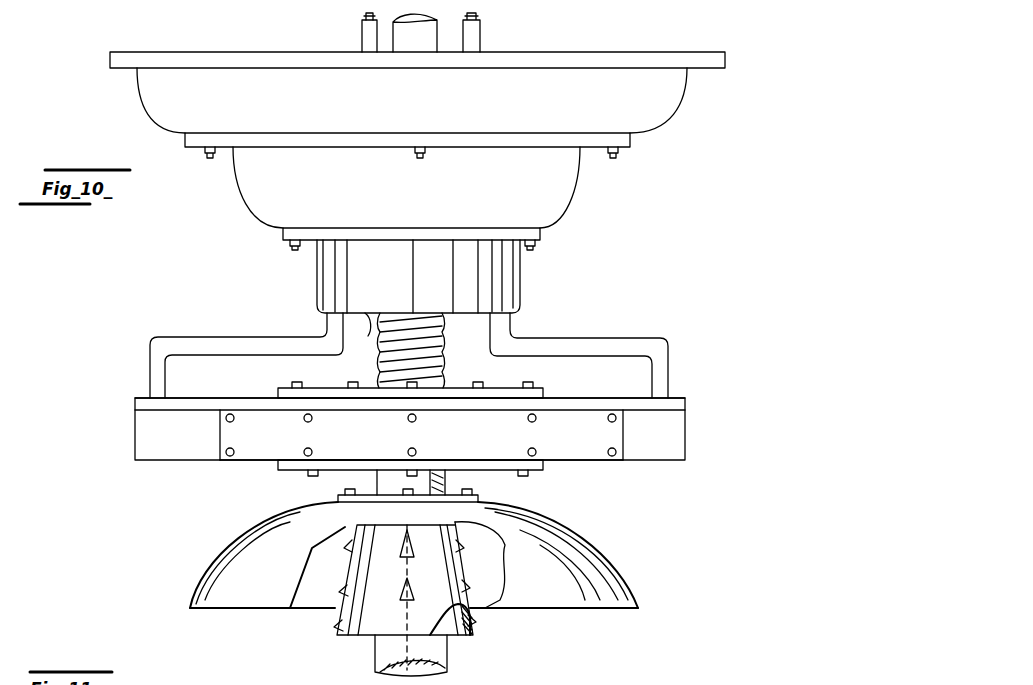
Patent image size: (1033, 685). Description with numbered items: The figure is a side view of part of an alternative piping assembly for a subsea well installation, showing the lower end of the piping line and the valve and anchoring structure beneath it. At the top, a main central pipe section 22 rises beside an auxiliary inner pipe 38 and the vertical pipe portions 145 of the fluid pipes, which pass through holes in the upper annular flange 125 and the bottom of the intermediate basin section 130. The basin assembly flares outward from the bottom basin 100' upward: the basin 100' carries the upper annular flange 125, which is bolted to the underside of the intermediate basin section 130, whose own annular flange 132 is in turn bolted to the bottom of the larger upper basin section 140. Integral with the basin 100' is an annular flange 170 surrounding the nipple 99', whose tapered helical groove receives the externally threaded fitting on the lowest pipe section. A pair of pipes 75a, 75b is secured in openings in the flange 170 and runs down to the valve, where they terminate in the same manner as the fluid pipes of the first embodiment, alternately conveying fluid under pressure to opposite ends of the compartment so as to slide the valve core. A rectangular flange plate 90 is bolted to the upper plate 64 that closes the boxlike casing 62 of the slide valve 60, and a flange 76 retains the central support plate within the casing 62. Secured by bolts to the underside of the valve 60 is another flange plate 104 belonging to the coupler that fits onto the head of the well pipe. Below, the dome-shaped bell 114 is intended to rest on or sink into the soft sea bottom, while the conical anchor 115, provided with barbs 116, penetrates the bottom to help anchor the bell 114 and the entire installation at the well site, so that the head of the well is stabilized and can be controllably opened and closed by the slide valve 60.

The inner pipe 38 is at (362, 17).
The vertical pipe portion 145 is at (367, 35).
The pipe section 22 is at (410, 35).
The upper basin section 140 is at (643, 113).
The annular flange 132 is at (630, 142).
The intermediate basin section 130 is at (555, 178).
The upper annular flange 125 is at (532, 238).
The basin 100' is at (449, 276).
The pipe 75b is at (253, 338).
The pipe 75a is at (658, 378).
The annular flange 170 is at (361, 338).
The nipple 99' is at (434, 350).
The flange plate 90 is at (507, 392).
The upper plate 64 is at (590, 400).
The casing 62 is at (431, 436).
The flange 76 is at (585, 442).
The slide valve 60 is at (170, 470).
The flange plate 104 is at (500, 470).
The dome-shaped bell 114 is at (560, 595).
The conical anchor 115 is at (453, 618).
The barbs 116 is at (477, 617).